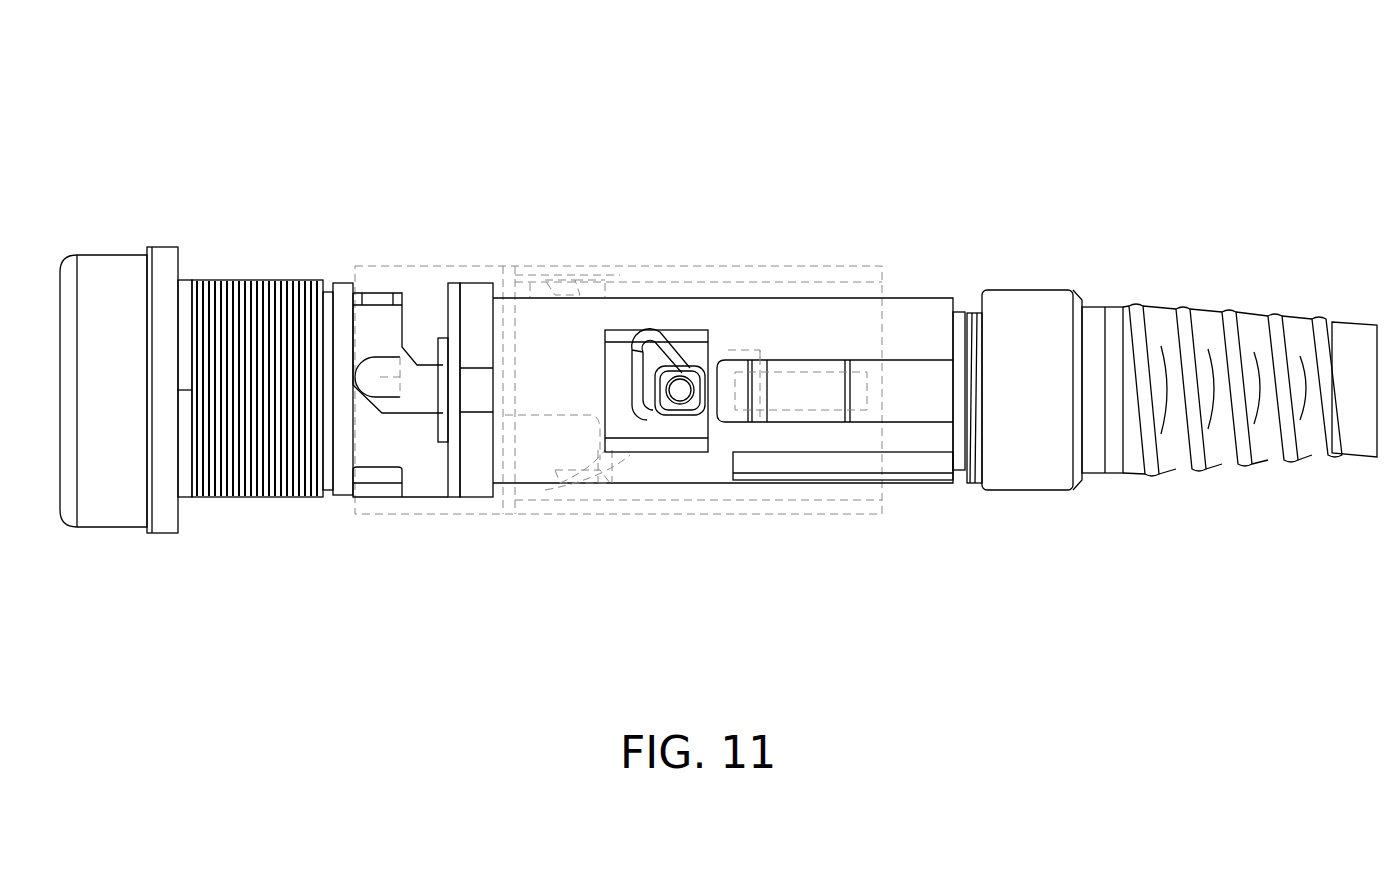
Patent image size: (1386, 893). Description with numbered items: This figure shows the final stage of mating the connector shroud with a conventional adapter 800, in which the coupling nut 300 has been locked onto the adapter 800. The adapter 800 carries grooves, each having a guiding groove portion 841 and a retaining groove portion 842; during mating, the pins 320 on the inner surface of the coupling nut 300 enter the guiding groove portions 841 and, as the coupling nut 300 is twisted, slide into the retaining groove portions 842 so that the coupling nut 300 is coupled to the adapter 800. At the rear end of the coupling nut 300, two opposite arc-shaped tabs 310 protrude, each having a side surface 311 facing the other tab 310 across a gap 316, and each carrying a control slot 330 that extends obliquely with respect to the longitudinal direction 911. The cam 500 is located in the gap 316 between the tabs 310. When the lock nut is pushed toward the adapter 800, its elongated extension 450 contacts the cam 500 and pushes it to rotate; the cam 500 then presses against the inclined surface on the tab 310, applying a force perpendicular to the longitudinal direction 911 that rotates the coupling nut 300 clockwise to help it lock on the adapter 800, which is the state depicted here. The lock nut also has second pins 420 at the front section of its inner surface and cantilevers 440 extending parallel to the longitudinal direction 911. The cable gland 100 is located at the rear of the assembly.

The longitudinal direction 911 is at (728, 72).
The adapter 800 is at (130, 247).
The coupling nut 300 is at (405, 265).
The retaining groove portion 842 is at (378, 318).
The guiding groove portion 841 is at (414, 396).
The pin 320 is at (383, 380).
The second pin 420 is at (565, 273).
The side surface 311 is at (642, 288).
The tab 310 is at (723, 406).
The gap 316 is at (597, 470).
The control slot 330 is at (605, 470).
The cam 500 is at (681, 401).
The extension 450 is at (680, 473).
The cantilever 440 is at (812, 395).
The cable gland 100 is at (993, 290).